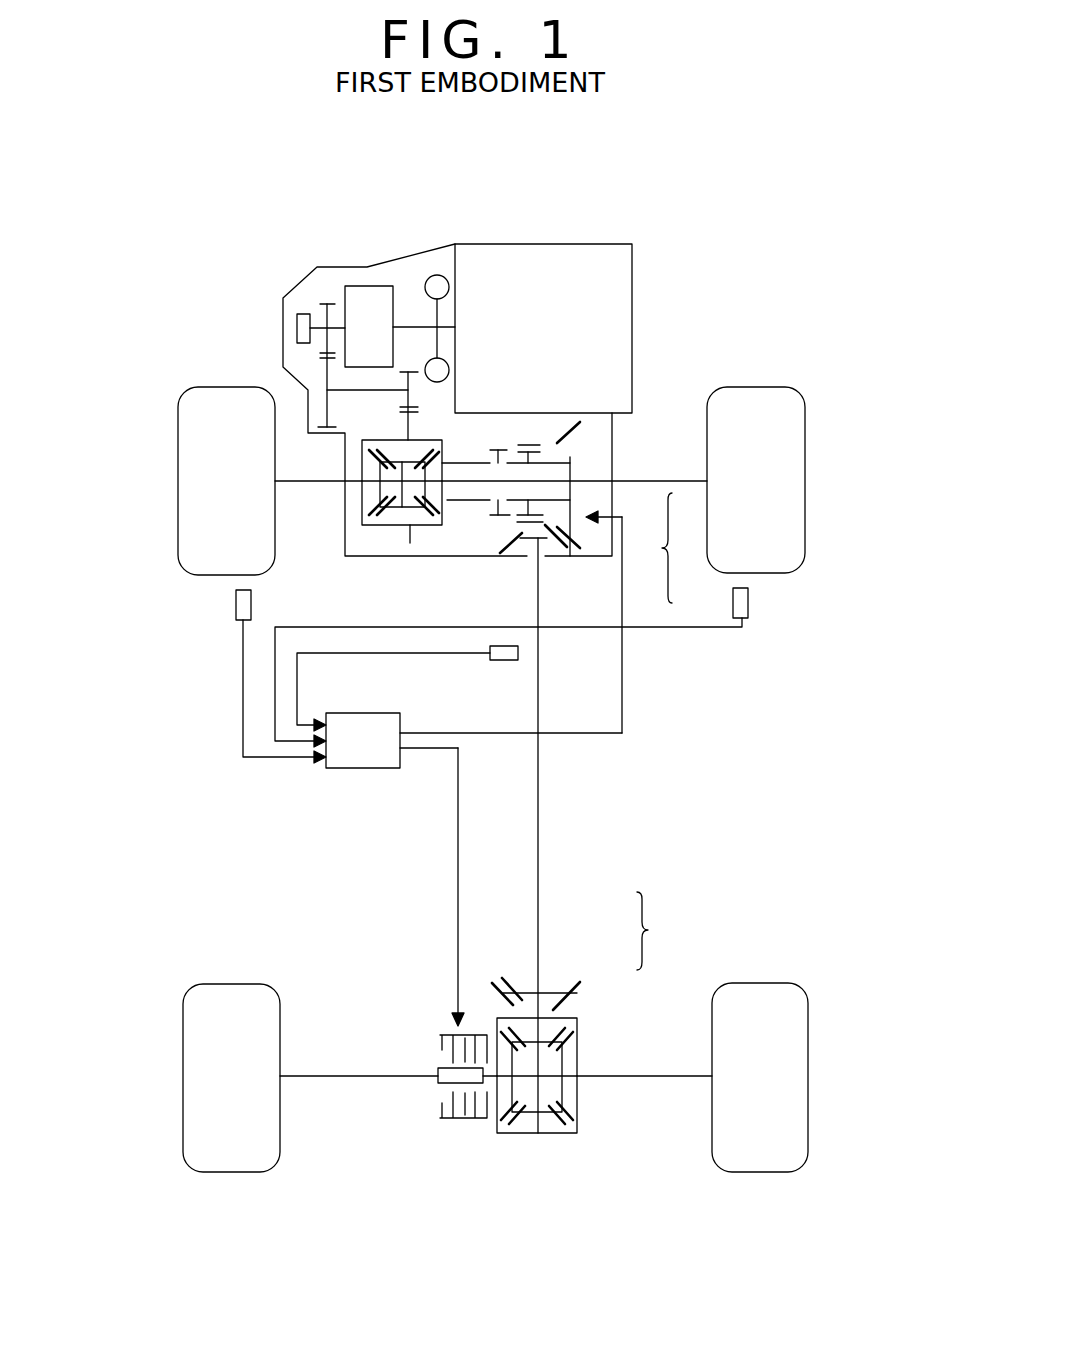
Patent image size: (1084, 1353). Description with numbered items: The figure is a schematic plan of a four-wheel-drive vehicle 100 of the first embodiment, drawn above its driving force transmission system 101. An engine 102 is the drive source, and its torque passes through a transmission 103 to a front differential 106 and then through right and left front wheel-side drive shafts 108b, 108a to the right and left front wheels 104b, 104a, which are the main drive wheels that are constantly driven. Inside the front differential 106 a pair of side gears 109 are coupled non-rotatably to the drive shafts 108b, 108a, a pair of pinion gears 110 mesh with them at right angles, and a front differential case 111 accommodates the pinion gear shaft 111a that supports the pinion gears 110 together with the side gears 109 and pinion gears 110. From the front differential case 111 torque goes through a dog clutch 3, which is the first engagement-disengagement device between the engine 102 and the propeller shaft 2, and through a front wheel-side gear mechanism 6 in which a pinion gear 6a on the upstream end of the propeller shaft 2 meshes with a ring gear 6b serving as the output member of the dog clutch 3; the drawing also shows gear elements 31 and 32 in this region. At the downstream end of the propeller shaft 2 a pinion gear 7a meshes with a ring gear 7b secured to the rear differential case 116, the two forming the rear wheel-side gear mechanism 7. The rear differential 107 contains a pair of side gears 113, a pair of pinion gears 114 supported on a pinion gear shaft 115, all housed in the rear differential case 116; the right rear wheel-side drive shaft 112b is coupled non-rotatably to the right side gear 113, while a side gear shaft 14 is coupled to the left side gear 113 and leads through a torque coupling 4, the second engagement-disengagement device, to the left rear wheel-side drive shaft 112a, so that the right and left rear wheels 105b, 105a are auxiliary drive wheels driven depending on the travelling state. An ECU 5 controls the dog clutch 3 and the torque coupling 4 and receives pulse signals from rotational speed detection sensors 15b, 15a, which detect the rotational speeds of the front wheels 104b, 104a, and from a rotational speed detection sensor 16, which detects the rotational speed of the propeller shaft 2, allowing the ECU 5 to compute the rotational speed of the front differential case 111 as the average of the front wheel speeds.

The four-wheel-drive vehicle 100 is at (712, 171).
The driving force transmission system 101 is at (699, 310).
The engine 102 is at (515, 244).
The transmission 103 is at (353, 262).
The left front wheel 104a is at (177, 483).
The right front wheel 104b is at (805, 482).
The left rear wheel 105a is at (183, 1077).
The right rear wheel 105b is at (808, 1077).
The front differential 106 is at (350, 528).
The rear differential 107 is at (591, 1110).
The left front wheel-side drive shaft 108a is at (336, 481).
The right front wheel-side drive shaft 108b is at (657, 463).
The side gear 109 is at (360, 497).
The pinion gear 110 is at (390, 452).
The front differential case 111 is at (405, 440).
The pinion gear shaft 111a is at (380, 483).
The left rear wheel-side drive shaft 112a is at (363, 1078).
The right rear wheel-side drive shaft 112b is at (633, 1078).
The side gear 113 is at (560, 1045).
The pinion gear 114 is at (565, 1030).
The pinion gear shaft 115 is at (555, 1072).
The rear differential case 116 is at (565, 1135).
The propeller shaft 2 is at (545, 840).
The dog clutch 3 is at (538, 430).
The drive gear 31 is at (493, 458).
The driven gear 32 is at (525, 512).
The torque coupling 4 is at (437, 1023).
The ECU 5 is at (362, 772).
The front wheel-side gear mechanism 6 is at (682, 548).
The pinion gear 6a is at (565, 557).
The ring gear 6b is at (570, 457).
The rear wheel-side gear mechanism 7 is at (654, 931).
The pinion gear 7a is at (580, 987).
The ring gear 7b is at (542, 957).
The side gear shaft 14 is at (498, 1080).
The rotational speed detection sensor 15a is at (748, 600).
The rotational speed detection sensor 15b is at (251, 603).
The rotational speed detection sensor 16 is at (503, 662).